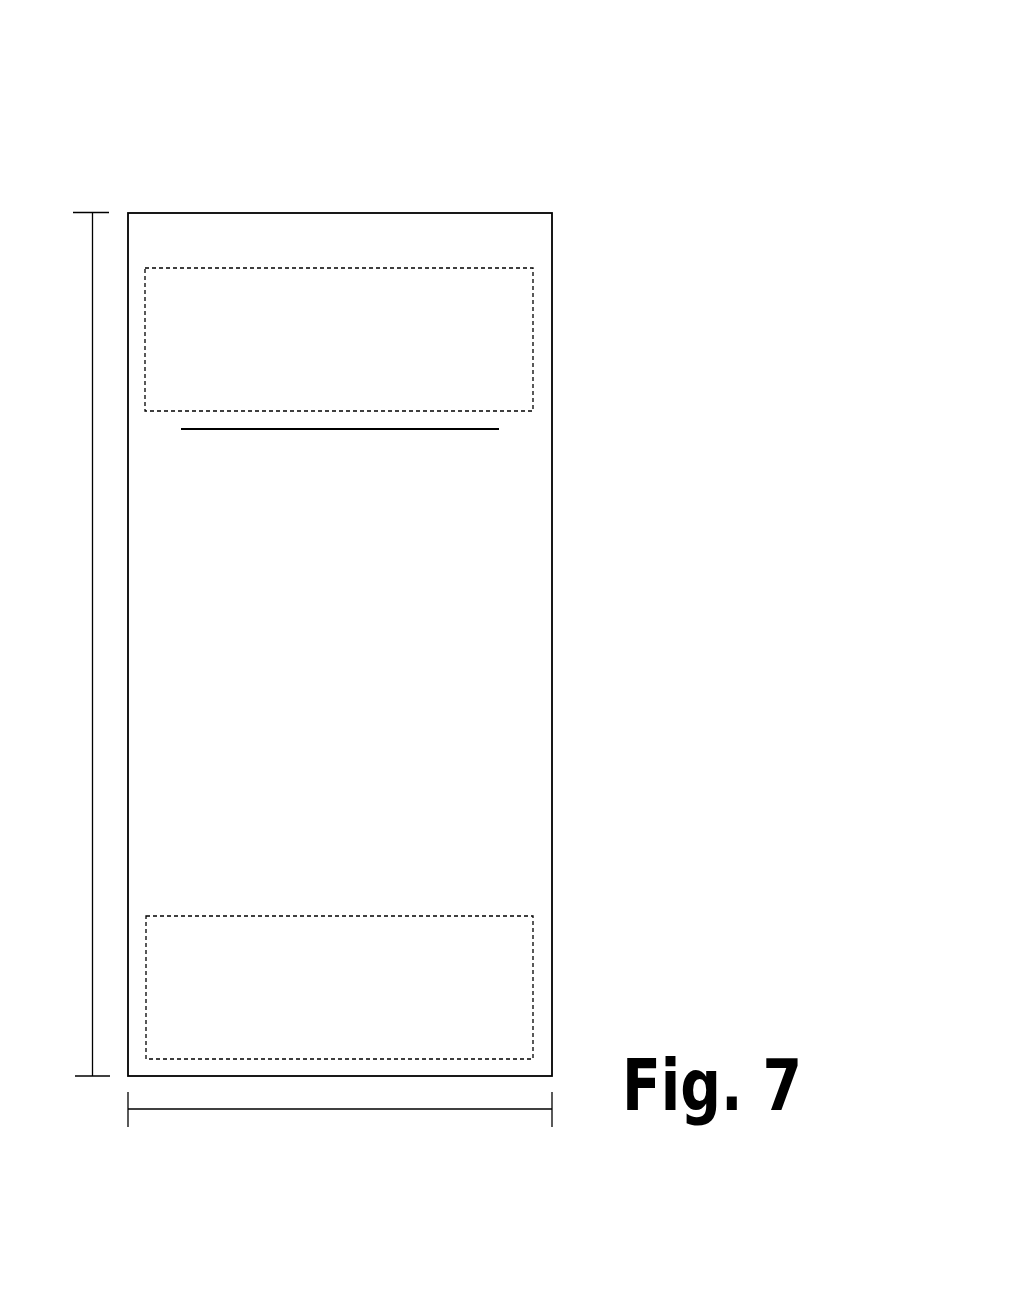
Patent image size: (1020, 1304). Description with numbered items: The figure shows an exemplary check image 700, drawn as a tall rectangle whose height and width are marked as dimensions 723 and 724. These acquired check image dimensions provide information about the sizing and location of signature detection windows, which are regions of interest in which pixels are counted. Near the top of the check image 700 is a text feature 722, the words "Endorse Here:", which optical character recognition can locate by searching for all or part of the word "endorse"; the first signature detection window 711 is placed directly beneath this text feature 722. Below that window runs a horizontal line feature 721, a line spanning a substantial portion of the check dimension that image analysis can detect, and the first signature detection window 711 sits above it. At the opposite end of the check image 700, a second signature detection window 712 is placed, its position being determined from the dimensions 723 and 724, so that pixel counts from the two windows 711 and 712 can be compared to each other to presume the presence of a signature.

The check image 700 is at (531, 108).
The first signature detection window 711 is at (480, 268).
The second signature detection window 712 is at (498, 916).
The horizontal line feature 721 is at (472, 430).
The text feature 722 is at (197, 240).
The dimension 723 is at (85, 645).
The dimension 724 is at (340, 1118).